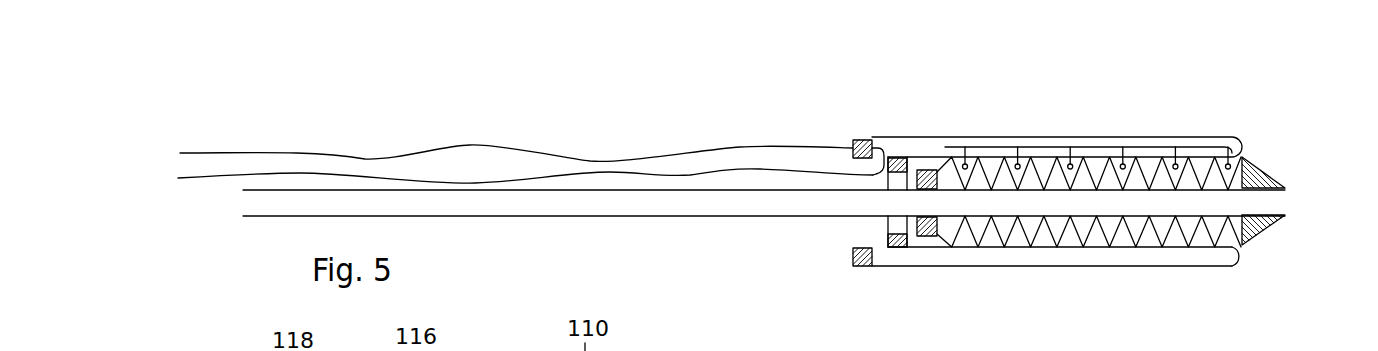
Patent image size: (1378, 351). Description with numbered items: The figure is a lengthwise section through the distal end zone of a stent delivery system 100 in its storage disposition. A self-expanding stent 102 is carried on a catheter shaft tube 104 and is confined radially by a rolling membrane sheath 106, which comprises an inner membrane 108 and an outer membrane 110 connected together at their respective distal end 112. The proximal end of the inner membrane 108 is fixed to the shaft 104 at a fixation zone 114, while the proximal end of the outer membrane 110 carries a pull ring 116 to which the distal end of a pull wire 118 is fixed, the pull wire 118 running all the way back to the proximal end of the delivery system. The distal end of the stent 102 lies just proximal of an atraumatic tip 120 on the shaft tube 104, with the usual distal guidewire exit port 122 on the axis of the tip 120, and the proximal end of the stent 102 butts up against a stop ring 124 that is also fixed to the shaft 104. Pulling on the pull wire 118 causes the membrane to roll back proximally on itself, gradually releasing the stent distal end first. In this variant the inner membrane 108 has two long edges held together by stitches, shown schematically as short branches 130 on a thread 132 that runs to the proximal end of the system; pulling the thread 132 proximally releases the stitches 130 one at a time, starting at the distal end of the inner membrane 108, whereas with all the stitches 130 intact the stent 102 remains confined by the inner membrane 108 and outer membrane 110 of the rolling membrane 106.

The delivery system 100 is at (547, 112).
The self-expanding stent 102 is at (953, 247).
The catheter shaft tube 104 is at (752, 220).
The rolling membrane sheath 106 is at (1003, 135).
The inner membrane 108 is at (1097, 250).
The outer membrane 110 is at (1027, 268).
The distal end 112 is at (1240, 263).
The fixation zone 114 is at (890, 257).
The pull ring 116 is at (855, 140).
The pull wire 118 is at (663, 153).
The atraumatic tip 120 is at (1258, 173).
The distal guidewire exit port 122 is at (1277, 200).
The stop ring 124 is at (928, 178).
The stitches 130 is at (1071, 164).
The thread 132 is at (565, 172).